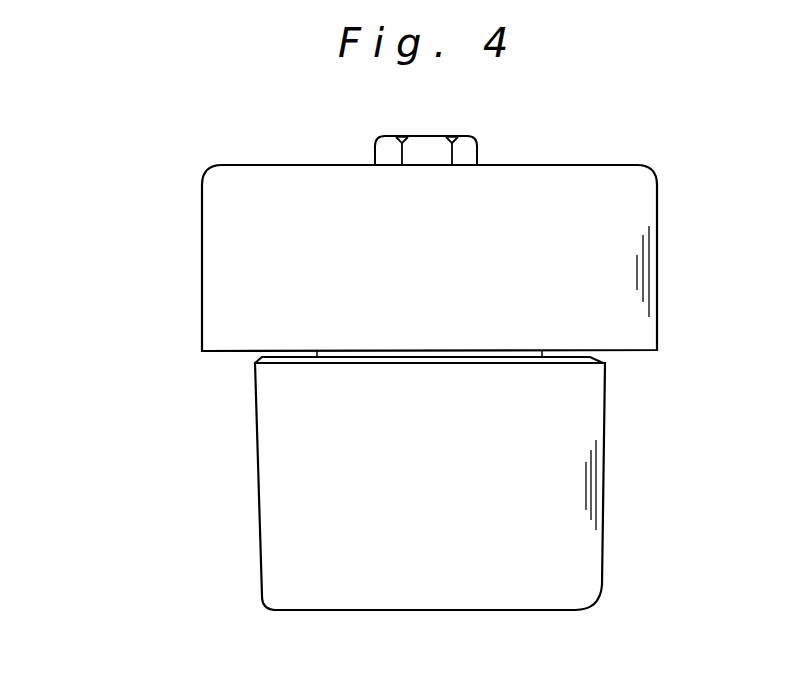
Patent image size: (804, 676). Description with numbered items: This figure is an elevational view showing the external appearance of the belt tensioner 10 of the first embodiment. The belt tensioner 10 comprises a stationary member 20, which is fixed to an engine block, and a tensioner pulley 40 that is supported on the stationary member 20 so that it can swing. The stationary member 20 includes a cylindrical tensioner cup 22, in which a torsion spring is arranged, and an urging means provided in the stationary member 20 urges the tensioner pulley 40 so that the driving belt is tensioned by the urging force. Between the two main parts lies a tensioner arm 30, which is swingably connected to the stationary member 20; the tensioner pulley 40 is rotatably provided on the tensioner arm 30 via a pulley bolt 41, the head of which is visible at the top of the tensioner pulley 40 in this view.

The belt tensioner 10 is at (178, 389).
The stationary member 20 is at (473, 489).
The tensioner cup 22 is at (588, 532).
The tensioner arm 30 is at (527, 363).
The tensioner pulley 40 is at (643, 220).
The pulley bolt 41 is at (467, 153).